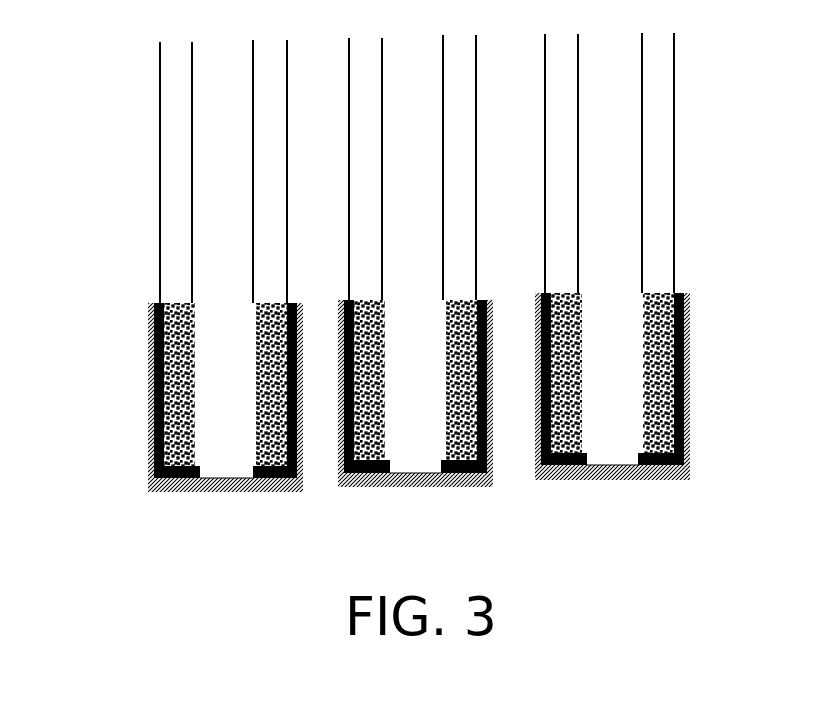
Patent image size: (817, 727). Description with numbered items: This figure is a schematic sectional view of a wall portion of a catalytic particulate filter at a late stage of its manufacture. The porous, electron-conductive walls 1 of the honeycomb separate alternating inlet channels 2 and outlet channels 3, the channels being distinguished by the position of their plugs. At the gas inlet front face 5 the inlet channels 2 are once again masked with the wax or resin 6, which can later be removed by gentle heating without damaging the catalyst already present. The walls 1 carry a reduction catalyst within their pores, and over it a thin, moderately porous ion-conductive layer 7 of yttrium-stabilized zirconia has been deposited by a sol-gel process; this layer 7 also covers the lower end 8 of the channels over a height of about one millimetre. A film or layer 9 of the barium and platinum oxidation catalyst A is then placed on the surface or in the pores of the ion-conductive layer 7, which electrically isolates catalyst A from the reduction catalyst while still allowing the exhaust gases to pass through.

The walls 1 is at (664, 158).
The inlet channels 2 is at (620, 134).
The outlet channels 3 is at (527, 134).
The gas inlet front face 5 is at (224, 504).
The wax or resin 6 is at (615, 466).
The ion-conductive layer 7 is at (685, 308).
The lower end of the channels 8 is at (687, 456).
The layer of catalyst A 9 is at (687, 328).